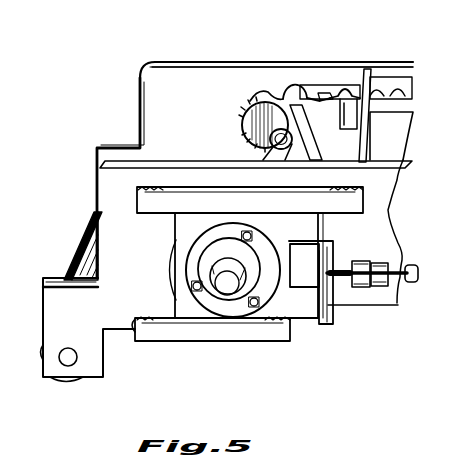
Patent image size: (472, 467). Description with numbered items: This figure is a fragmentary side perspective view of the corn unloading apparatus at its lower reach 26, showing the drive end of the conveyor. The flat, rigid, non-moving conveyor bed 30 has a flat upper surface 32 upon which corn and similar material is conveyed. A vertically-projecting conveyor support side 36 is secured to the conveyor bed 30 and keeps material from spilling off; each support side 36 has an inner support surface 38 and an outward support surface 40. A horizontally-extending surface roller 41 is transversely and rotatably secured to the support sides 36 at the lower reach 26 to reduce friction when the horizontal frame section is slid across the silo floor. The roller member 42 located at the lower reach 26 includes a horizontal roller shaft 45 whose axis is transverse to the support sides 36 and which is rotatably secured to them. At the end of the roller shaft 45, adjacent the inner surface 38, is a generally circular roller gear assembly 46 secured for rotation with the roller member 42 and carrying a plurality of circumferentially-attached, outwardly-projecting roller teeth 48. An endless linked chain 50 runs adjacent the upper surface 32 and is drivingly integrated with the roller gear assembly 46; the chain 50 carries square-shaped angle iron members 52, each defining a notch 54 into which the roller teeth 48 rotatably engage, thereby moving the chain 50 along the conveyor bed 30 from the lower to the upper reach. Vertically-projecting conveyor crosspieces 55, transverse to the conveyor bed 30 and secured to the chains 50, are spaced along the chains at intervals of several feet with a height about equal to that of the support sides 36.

The lower reach 26 is at (130, 349).
The conveyor bed 30 is at (403, 160).
The upper surface 32 is at (396, 137).
The conveyor support side 36 is at (156, 62).
The inner support surface 38 is at (179, 83).
The outward support surface 40 is at (222, 88).
The surface roller 41 is at (82, 252).
The roller member 42 is at (250, 154).
The roller shaft 45 is at (247, 140).
The roller gear assembly 46 is at (246, 127).
The roller teeth 48 is at (298, 85).
The endless linked chain 50 is at (316, 88).
The angle iron member 52 is at (351, 92).
The notch 54 is at (333, 97).
The conveyor crosspiece 55 is at (364, 82).